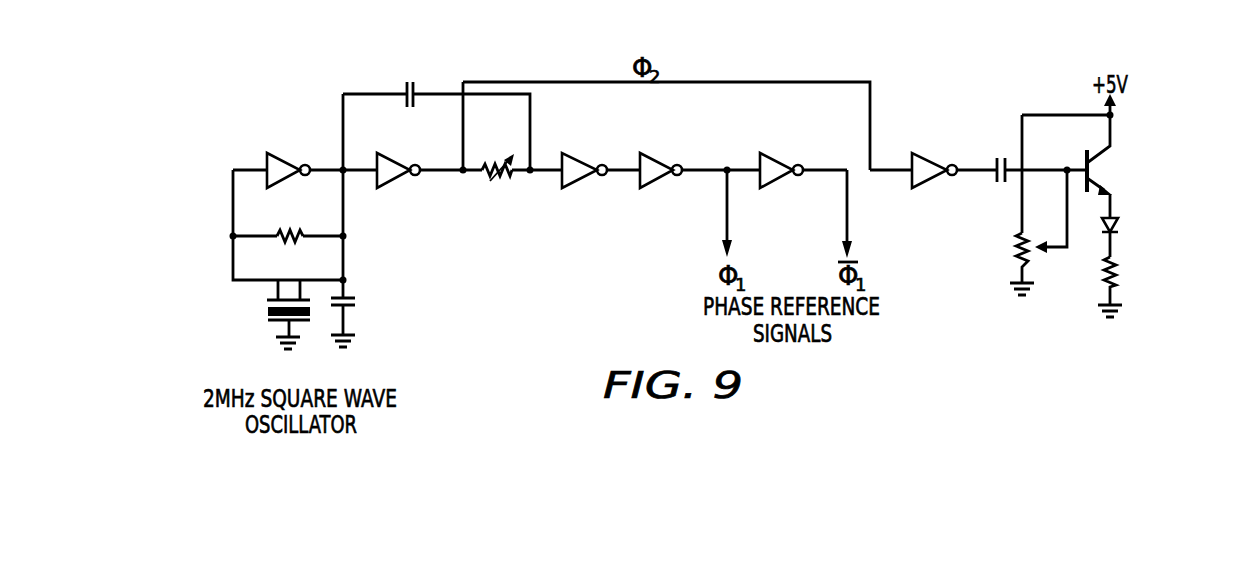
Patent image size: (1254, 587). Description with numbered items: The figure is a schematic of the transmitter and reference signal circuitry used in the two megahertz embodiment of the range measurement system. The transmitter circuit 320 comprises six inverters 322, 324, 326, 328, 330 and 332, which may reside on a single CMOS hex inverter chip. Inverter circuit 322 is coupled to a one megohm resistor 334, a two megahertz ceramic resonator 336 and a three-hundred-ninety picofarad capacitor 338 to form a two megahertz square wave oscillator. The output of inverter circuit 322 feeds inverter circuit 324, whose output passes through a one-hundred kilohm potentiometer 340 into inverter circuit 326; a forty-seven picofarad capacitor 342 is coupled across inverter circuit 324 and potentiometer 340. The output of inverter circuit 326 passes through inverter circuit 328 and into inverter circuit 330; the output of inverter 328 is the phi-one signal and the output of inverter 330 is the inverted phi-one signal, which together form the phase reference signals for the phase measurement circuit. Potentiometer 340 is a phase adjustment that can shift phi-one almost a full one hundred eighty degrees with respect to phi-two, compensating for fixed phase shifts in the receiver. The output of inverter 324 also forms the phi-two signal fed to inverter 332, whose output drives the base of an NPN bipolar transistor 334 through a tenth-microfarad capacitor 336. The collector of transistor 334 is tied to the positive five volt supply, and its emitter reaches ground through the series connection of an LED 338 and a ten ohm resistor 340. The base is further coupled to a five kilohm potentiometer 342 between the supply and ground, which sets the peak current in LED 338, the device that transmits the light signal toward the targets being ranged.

The transmitter circuit 320 is at (294, 60).
The inverter circuit 322 is at (300, 138).
The inverter circuit 324 is at (393, 187).
The inverter circuit 326 is at (583, 184).
The inverter circuit 328 is at (658, 184).
The inverter circuit 330 is at (778, 184).
The inverter circuit 332 is at (930, 157).
The 1 MΩ resistor / NPN bipolar transistor 334 is at (288, 235).
The 2 MHz ceramic resonator / 0.1 μF capacitor 336 is at (277, 327).
The 390 pF capacitor / LED 338 is at (353, 308).
The 100 kΩ potentiometer / 10 Ω resistor 340 is at (502, 160).
The 47 pF capacitor / 5 kΩ potentiometer 342 is at (404, 85).